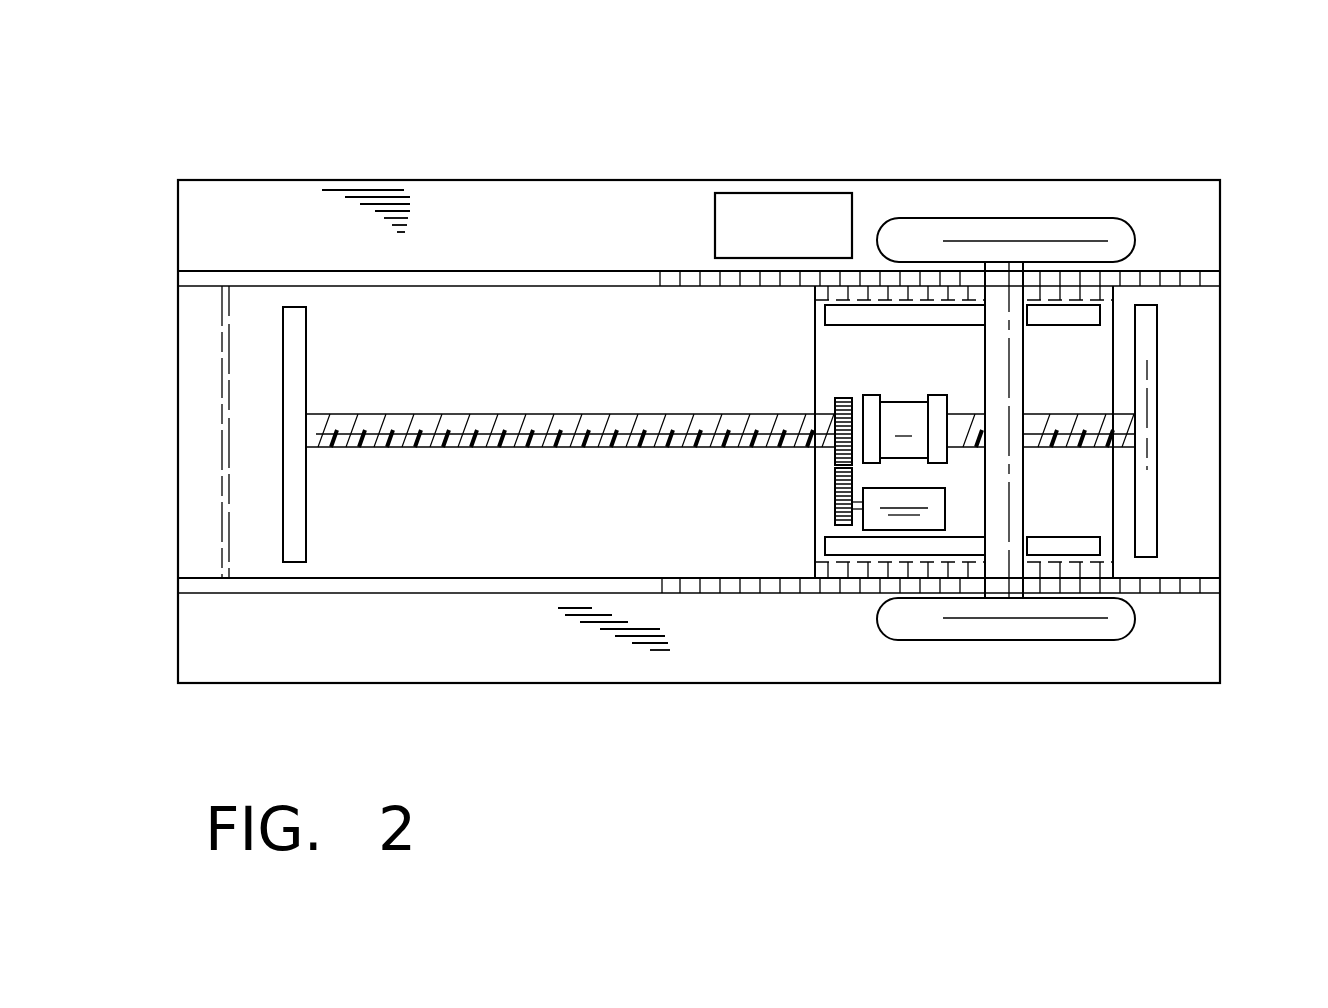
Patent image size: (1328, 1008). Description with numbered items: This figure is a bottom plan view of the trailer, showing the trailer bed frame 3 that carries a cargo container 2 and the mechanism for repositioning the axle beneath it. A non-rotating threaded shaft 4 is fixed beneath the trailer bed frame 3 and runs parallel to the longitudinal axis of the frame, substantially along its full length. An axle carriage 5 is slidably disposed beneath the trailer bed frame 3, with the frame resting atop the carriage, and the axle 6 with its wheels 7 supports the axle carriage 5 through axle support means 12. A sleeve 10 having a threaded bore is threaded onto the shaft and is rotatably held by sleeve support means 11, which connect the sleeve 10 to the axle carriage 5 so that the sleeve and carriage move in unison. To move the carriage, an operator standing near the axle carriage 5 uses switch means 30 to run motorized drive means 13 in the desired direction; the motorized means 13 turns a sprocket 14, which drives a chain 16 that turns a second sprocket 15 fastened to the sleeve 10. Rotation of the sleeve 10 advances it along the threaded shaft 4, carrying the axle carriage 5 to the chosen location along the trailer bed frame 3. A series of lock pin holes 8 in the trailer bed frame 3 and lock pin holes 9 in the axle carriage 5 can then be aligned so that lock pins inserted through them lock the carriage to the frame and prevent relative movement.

The cargo container 2 is at (258, 200).
The trailer bed frame 3 is at (487, 275).
The threaded shaft 4 is at (450, 450).
The axle carriage 5 is at (1100, 505).
The axle 6 is at (1007, 273).
The wheel 7 is at (1045, 628).
The trailer bed frame lock pin holes 8 is at (668, 272).
The axle carriage lock pin holes 9 is at (890, 292).
The sleeve 10 is at (903, 442).
The sleeve support means 11 is at (935, 420).
The axle support means 12 is at (1085, 312).
The motorized drive means 13 is at (910, 512).
The sprocket 14 is at (838, 508).
The sprocket 15 is at (835, 407).
The chain 16 is at (838, 472).
The switch means 30 is at (783, 193).